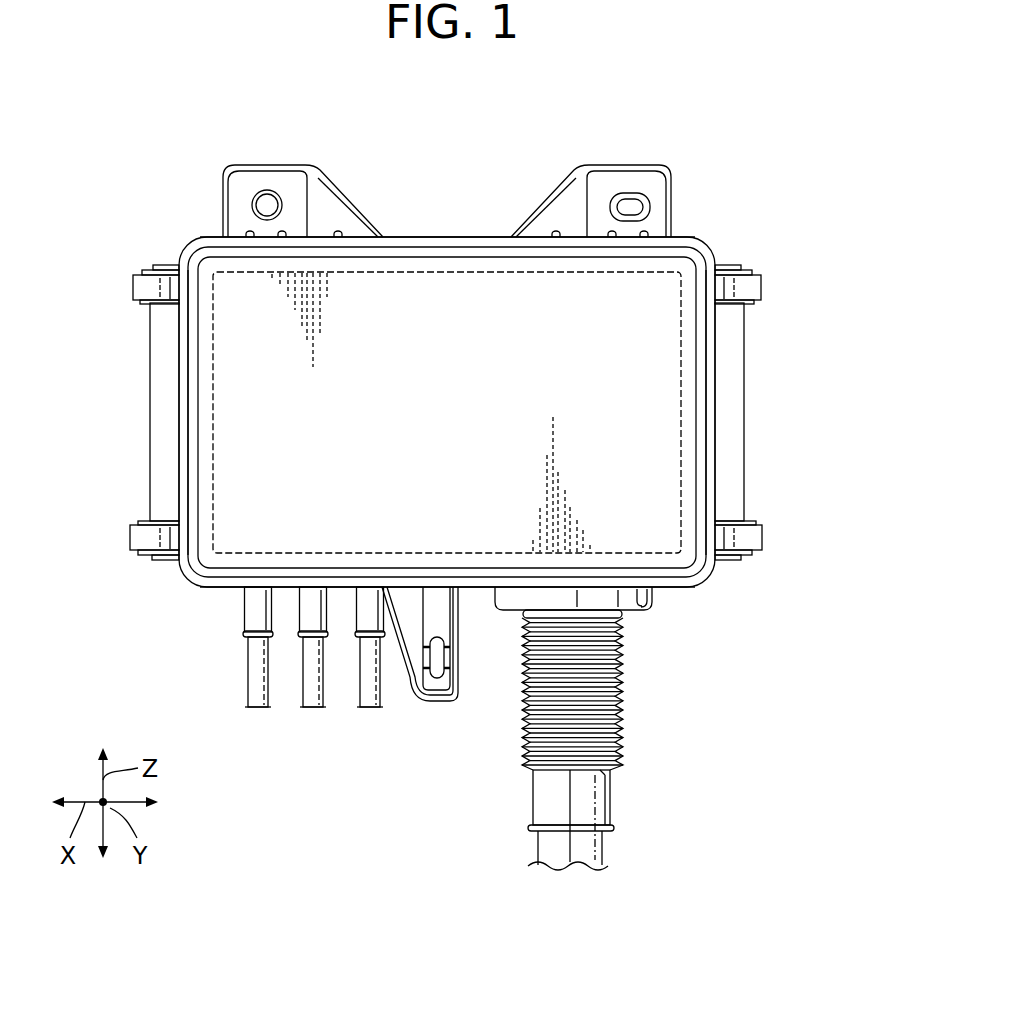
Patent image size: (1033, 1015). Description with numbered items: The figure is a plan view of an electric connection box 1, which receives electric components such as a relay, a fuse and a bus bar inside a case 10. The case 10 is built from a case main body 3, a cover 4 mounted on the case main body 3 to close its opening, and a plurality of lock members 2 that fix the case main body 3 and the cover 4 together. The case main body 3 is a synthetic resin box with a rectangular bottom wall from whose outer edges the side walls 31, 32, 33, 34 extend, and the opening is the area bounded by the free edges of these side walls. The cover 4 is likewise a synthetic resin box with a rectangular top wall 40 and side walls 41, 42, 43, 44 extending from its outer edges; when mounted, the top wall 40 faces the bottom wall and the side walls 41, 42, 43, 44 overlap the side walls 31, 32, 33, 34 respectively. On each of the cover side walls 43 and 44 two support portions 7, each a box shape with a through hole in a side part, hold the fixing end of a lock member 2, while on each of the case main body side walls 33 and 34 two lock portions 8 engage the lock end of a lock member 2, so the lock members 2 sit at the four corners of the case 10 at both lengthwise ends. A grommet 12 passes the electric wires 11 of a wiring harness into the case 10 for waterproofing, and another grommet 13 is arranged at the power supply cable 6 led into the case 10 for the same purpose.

The electric connection box 1 is at (748, 119).
The lock member 2 is at (140, 290).
The case main body 3 is at (223, 592).
The cover 4 is at (253, 560).
The power supply cable 6 is at (258, 695).
The support portion 7 is at (175, 285).
The lock portion 8 is at (150, 306).
The case 10 is at (190, 585).
The electric wire 11 is at (602, 845).
The grommet 12 is at (622, 668).
The grommet 13 is at (314, 654).
The side wall 31 is at (453, 700).
The side wall 32 is at (397, 236).
The side wall 33 is at (178, 389).
The side wall 34 is at (717, 389).
The top wall 40 is at (435, 322).
The side wall 41 is at (480, 587).
The side wall 42 is at (488, 243).
The side wall 43 is at (187, 355).
The side wall 44 is at (712, 355).